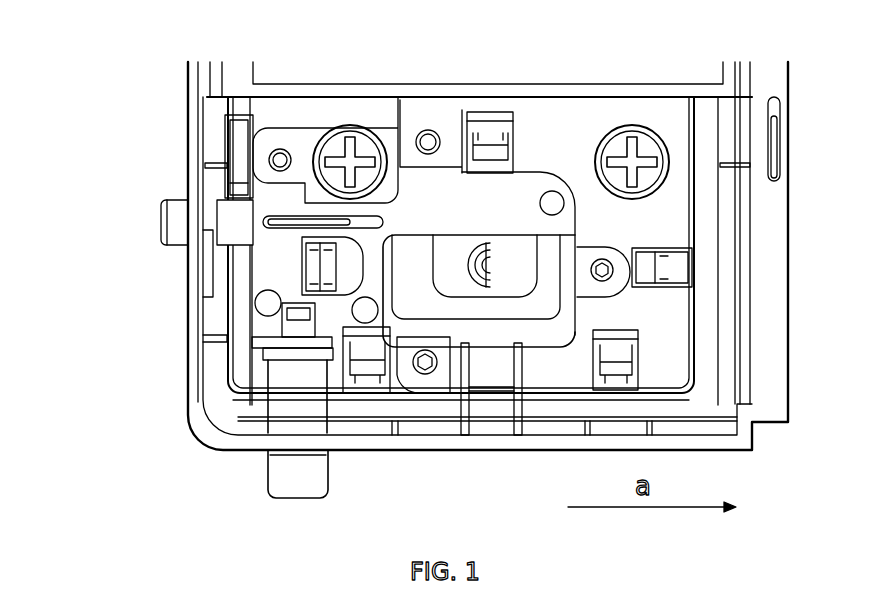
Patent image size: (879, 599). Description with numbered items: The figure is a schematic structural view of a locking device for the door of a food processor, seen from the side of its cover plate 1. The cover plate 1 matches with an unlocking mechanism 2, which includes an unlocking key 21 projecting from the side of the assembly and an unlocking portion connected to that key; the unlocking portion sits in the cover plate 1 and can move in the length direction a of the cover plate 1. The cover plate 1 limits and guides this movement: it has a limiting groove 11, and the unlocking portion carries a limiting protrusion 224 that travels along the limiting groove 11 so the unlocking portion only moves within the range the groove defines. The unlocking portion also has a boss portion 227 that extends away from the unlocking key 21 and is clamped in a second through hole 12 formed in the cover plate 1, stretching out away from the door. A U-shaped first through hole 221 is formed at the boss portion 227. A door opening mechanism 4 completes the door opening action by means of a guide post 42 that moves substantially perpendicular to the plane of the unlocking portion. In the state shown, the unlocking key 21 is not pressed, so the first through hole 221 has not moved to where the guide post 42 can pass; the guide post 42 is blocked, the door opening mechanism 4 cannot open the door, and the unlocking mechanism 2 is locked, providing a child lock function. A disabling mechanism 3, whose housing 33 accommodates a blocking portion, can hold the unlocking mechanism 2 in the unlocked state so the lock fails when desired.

The cover plate 1 is at (417, 222).
The unlocking mechanism 2 is at (178, 247).
The disabling mechanism 3 is at (326, 476).
The door opening mechanism 4 is at (470, 236).
The limiting groove 11 is at (248, 203).
The second through hole 12 is at (585, 242).
The unlocking key 21 is at (173, 222).
The housing 33 is at (298, 383).
The guide post 42 is at (483, 252).
The first through hole 221 is at (498, 258).
The limiting protrusion 224 is at (263, 220).
The boss portion 227 is at (350, 137).